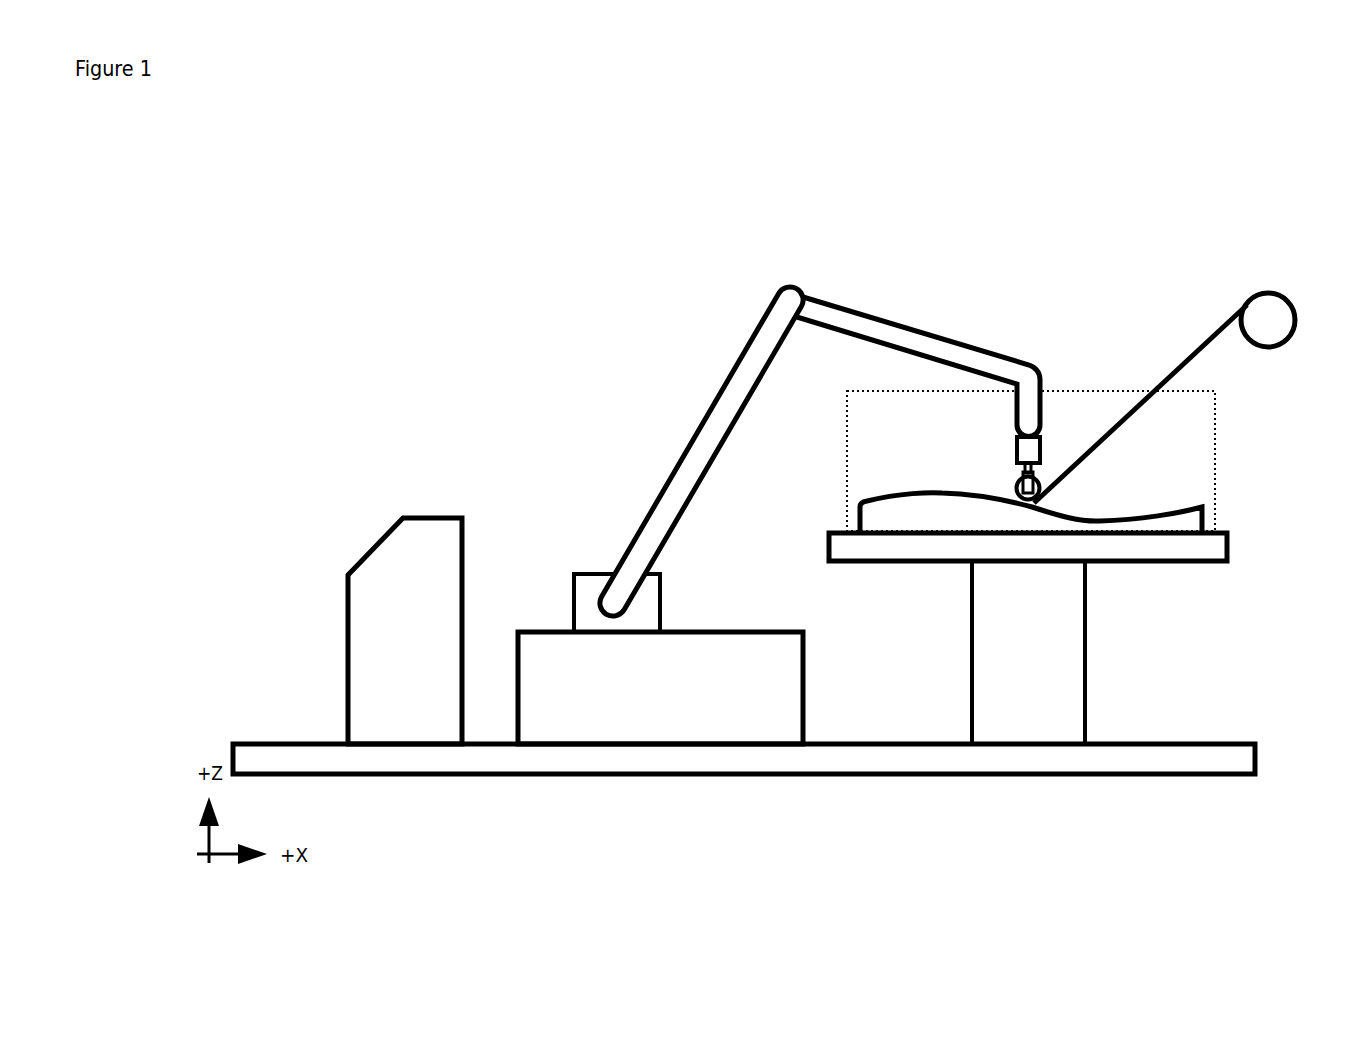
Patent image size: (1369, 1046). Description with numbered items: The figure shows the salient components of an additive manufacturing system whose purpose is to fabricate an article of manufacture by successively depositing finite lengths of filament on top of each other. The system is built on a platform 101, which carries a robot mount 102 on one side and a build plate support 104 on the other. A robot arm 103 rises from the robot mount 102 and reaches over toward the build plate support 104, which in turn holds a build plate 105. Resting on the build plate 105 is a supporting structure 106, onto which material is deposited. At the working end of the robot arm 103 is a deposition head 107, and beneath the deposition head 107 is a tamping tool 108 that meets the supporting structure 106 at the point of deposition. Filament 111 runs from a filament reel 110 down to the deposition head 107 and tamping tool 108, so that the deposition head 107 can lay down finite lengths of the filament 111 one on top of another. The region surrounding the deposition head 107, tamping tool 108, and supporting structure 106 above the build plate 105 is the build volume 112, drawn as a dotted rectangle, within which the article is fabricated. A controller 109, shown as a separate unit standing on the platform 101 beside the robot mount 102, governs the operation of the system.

The platform 101 is at (1145, 744).
The robot mount 102 is at (803, 688).
The robot arm 103 is at (708, 438).
The build plate support 104 is at (1087, 688).
The build plate 105 is at (1228, 545).
The supporting structure 106 is at (1103, 515).
The deposition head 107 is at (1030, 452).
The tamping tool 108 is at (1027, 485).
The controller 109 is at (440, 517).
The filament reel 110 is at (1250, 298).
The filament 111 is at (1117, 426).
The build volume 112 is at (1215, 433).